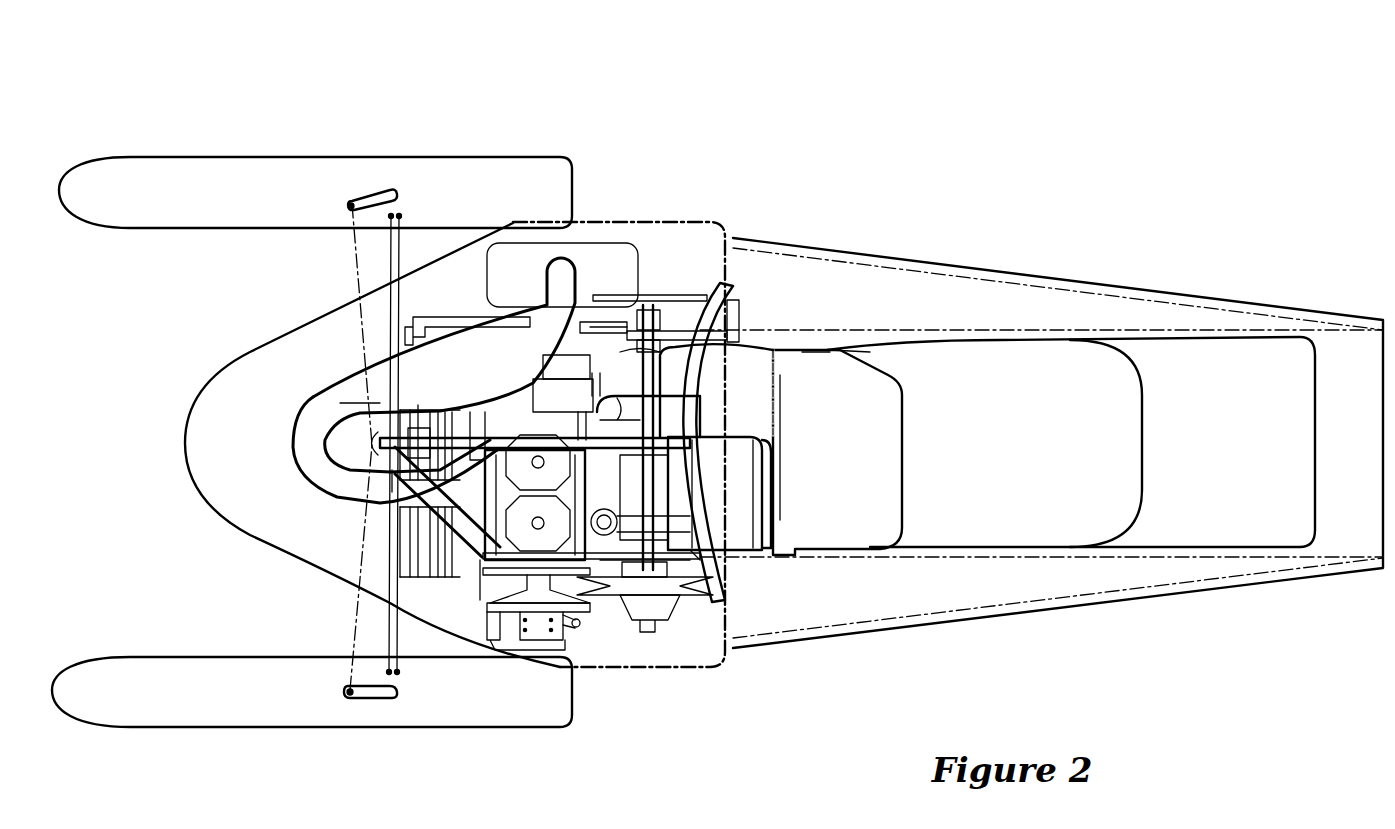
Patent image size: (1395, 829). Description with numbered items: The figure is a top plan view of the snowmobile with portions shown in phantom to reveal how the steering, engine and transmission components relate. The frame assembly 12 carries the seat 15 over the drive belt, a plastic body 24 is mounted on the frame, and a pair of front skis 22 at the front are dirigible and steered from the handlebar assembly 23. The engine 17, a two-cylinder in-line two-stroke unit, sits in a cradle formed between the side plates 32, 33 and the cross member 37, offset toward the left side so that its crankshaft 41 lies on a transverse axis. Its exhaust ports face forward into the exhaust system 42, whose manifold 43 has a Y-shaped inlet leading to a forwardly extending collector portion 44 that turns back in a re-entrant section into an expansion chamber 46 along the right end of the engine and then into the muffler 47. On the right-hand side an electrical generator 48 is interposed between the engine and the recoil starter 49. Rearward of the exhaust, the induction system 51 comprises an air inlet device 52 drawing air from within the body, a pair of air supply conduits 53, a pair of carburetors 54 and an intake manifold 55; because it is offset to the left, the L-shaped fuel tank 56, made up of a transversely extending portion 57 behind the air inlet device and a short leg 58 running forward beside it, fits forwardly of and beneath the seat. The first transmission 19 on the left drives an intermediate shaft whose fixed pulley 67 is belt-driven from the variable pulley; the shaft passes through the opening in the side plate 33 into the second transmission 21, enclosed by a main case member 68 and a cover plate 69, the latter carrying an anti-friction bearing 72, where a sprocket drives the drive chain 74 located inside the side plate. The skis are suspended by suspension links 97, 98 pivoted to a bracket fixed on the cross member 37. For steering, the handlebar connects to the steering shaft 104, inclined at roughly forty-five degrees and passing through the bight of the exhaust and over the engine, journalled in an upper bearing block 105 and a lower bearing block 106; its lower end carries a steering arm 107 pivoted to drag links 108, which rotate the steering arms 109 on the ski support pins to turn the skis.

The frame assembly 12 is at (950, 262).
The seat 15 is at (1140, 366).
The internal combustion engine 17 is at (480, 562).
The first transmission 19 is at (616, 636).
The second transmission 21 is at (677, 318).
The front skis 22 is at (232, 157).
The handlebar assembly 23 is at (738, 312).
The body 24 is at (197, 410).
The side plate 32 is at (703, 607).
The side plate 33 is at (430, 320).
The cross member 37 is at (413, 543).
The crankshaft 41 is at (513, 553).
The exhaust system 42 is at (295, 463).
The manifold 43 is at (455, 490).
The collector portion 44 is at (337, 482).
The expansion chamber 46 is at (383, 363).
The muffler 47 is at (530, 252).
The electrical generator 48 is at (657, 396).
The recoil starter 49 is at (547, 368).
The induction system 51 is at (772, 490).
The air inlet device 52 is at (740, 458).
The air supply conduits 53 is at (620, 485).
The carburetors 54 is at (615, 500).
The intake manifold 55 is at (550, 562).
The fuel tank 56 is at (874, 350).
The transversely extending portion 57 is at (902, 470).
The short leg 58 is at (830, 352).
The fixed pulley 67 is at (647, 593).
The main case member 68 is at (760, 346).
The cover plate 69 is at (724, 283).
The anti-friction bearing 72 is at (624, 300).
The drive chain 74 is at (763, 360).
The suspension link 97 is at (400, 240).
The suspension link 98 is at (400, 240).
The steering shaft 104 is at (466, 412).
The bearing block 105 is at (615, 422).
The lower bearing block 106 is at (380, 407).
The steering arm 107 is at (346, 441).
The drag links 108 is at (355, 243).
The steering arms 109 is at (356, 198).